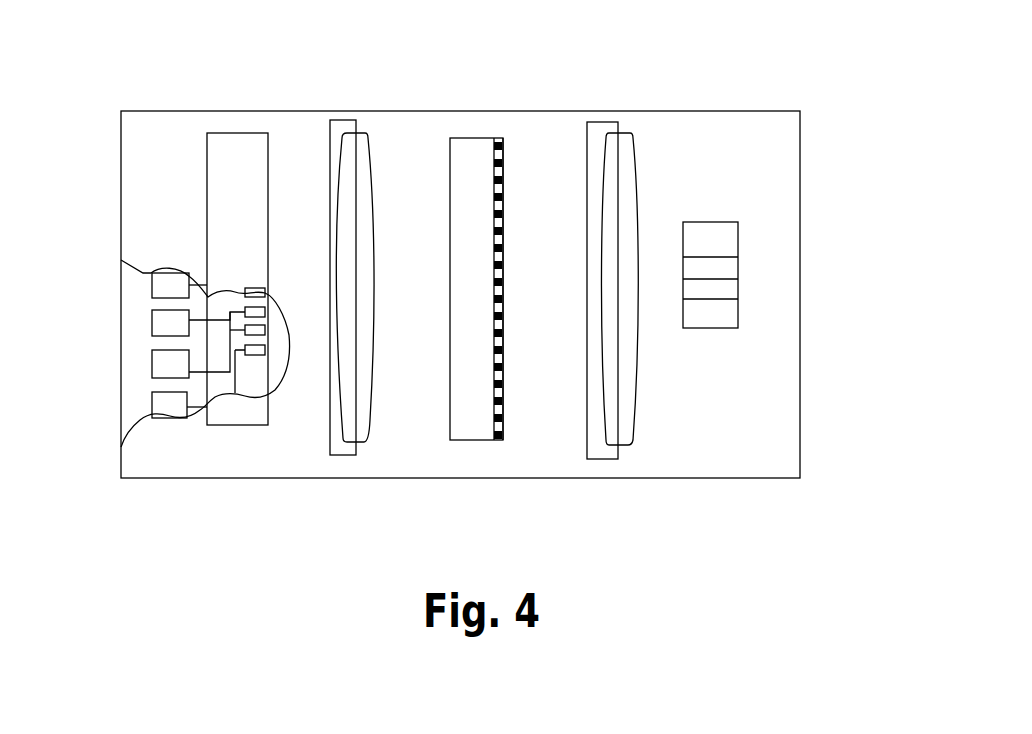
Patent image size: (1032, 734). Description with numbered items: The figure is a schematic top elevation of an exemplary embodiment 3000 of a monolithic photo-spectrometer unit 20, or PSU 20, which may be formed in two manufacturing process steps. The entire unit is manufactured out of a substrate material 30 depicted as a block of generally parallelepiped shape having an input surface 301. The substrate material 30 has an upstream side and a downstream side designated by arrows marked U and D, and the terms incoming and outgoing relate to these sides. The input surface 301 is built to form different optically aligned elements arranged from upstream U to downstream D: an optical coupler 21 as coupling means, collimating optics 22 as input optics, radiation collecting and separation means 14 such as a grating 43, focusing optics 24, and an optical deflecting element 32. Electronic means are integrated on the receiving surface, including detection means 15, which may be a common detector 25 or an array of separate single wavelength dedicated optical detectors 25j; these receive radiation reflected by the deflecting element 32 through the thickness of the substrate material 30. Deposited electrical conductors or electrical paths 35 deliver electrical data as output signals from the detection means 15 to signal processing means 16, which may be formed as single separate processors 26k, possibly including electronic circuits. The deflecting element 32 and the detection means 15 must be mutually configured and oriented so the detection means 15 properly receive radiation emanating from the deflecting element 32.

The exemplary embodiment 3000 is at (730, 48).
The monolithic photo-spectrometer unit 20 is at (748, 85).
The upstream side U is at (864, 149).
The input surface 301 is at (779, 463).
The optical deflecting element 32 is at (238, 133).
The signal processing means 16 is at (145, 324).
The single separate processors 26k is at (160, 366).
The downstream side D is at (84, 268).
The electrical path 35 is at (212, 320).
The single wavelength dedicated optical detectors 25j is at (266, 312).
The detection means 15 is at (265, 370).
The common detector 25 is at (311, 418).
The focusing optics 24 is at (356, 120).
The grating 43 is at (477, 138).
The radiation collecting and separation means 14 is at (486, 138).
The collimating optics 22 is at (602, 122).
The optical coupler 21 is at (740, 236).
The substrate material 30 is at (780, 300).